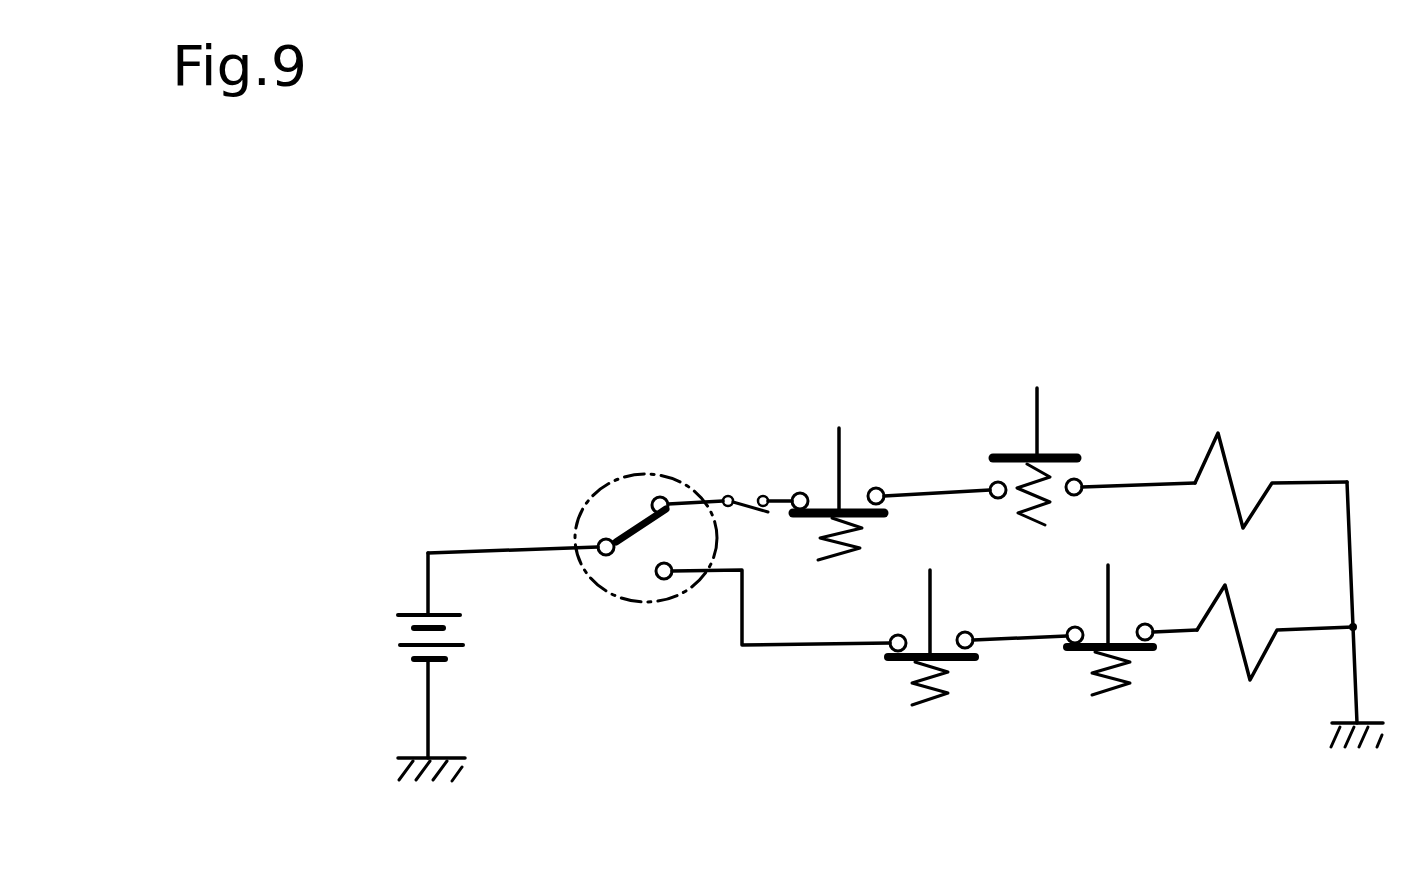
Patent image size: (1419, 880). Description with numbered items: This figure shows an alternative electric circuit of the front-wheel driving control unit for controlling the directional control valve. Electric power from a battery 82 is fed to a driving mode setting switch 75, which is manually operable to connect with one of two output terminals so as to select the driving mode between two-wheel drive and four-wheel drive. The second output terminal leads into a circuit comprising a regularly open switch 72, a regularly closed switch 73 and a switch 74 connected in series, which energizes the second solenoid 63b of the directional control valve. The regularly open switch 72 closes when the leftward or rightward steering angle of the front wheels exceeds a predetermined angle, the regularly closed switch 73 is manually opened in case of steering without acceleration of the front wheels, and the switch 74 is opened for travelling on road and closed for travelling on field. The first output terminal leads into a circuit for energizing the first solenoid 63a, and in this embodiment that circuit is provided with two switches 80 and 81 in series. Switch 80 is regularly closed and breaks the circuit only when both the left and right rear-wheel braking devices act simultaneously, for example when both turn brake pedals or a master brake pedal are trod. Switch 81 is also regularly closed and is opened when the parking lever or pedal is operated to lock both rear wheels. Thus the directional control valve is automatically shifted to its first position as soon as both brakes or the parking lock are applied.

The battery 82 is at (410, 613).
The driving mode setting switch 75 is at (624, 477).
The switch 74 is at (743, 502).
The regularly closed switch 73 is at (839, 450).
The regularly open switch 72 is at (1038, 417).
The switch 80 is at (932, 595).
The switch 81 is at (1110, 590).
The second solenoid 63b is at (1221, 451).
The first solenoid 63a is at (1243, 660).